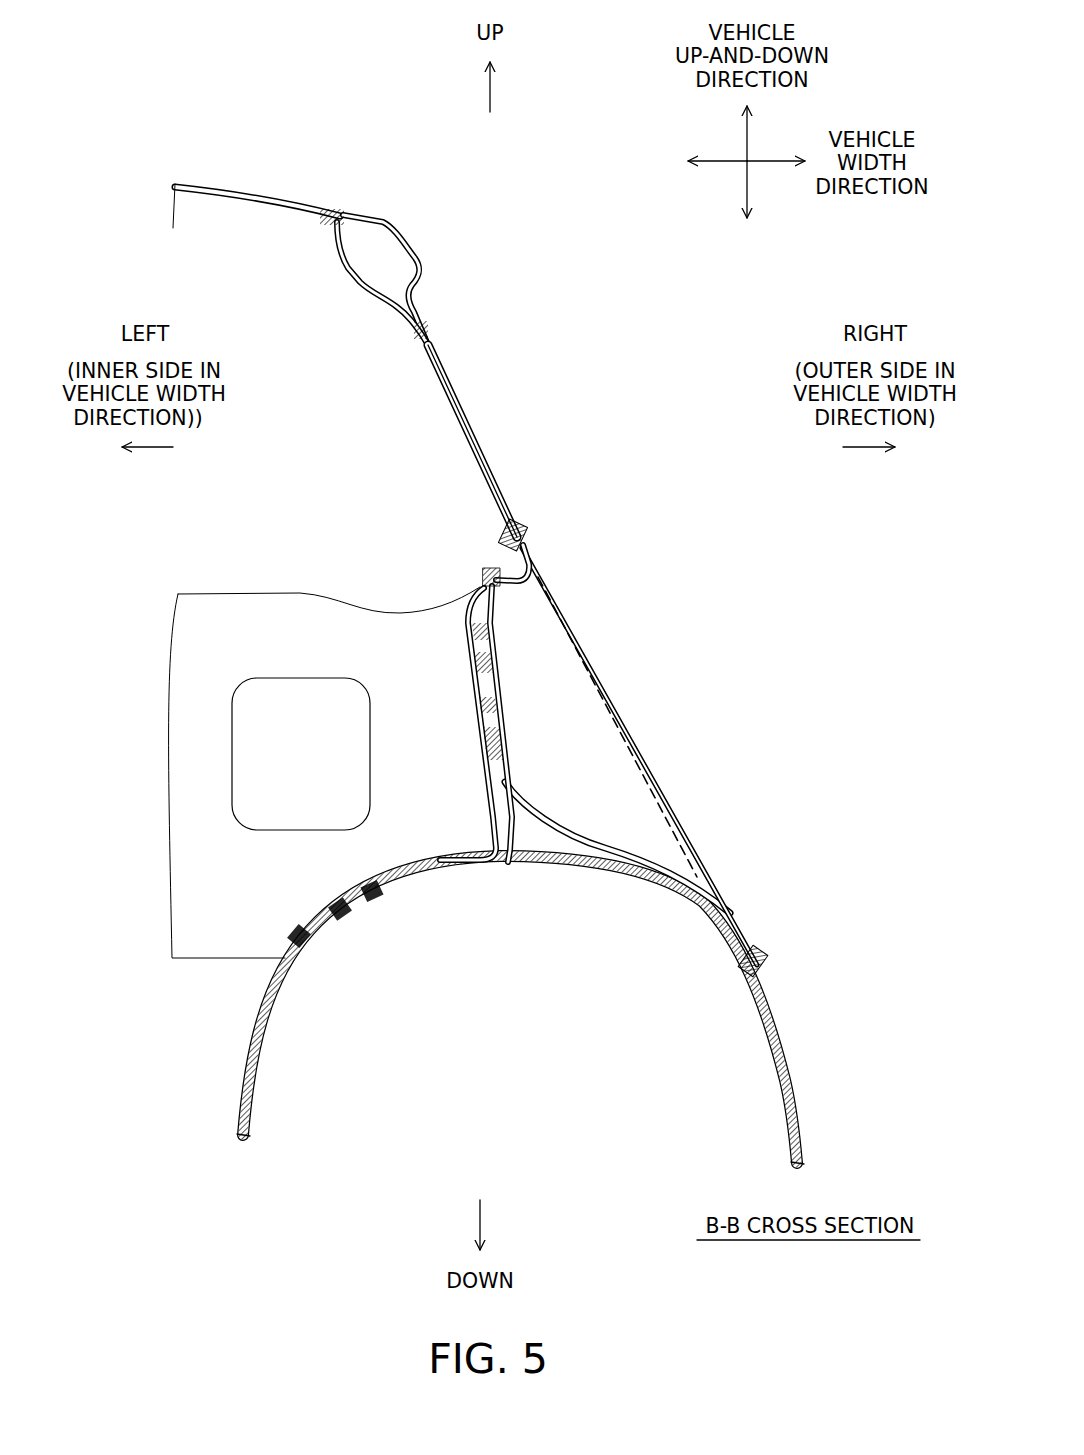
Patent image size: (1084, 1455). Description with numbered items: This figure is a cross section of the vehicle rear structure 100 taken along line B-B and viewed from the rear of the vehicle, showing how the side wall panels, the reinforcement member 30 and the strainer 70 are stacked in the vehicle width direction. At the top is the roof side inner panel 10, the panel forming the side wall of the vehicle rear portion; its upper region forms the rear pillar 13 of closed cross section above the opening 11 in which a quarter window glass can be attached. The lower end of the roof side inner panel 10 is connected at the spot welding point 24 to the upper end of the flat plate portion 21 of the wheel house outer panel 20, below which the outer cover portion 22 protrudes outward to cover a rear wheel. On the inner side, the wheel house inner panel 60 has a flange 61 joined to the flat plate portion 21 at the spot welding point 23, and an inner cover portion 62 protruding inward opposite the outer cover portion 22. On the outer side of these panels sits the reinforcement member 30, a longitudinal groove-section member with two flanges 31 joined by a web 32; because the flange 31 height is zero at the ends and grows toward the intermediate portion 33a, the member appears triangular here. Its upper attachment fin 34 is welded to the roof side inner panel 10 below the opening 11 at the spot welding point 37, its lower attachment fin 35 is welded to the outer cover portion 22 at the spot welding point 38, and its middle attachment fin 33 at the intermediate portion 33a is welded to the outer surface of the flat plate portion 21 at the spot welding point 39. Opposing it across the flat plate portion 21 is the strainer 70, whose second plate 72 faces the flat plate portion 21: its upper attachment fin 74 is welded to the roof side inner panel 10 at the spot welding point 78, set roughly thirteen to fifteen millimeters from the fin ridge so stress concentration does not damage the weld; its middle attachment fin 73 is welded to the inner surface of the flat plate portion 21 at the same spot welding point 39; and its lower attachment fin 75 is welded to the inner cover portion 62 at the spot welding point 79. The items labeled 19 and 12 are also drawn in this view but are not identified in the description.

The vehicle rear structure 100 is at (170, 104).
The roof panel 19 is at (270, 195).
The rear pillar 13 is at (405, 245).
The opening 11 is at (458, 393).
The roof side inner panel 10 is at (493, 455).
The pillar inner flange 12 is at (508, 495).
The upper attachment fin 34 is at (527, 535).
The spot welding point 37 is at (528, 543).
The spot welding point 39 is at (530, 665).
The web 32 is at (594, 667).
The flange 31 is at (563, 704).
The middle attachment fin 33 is at (512, 714).
The intermediate portion 33a is at (590, 776).
The reinforcement member 30 is at (680, 818).
The spot welding point 38 is at (754, 947).
The lower attachment fin 35 is at (762, 968).
The outer cover portion 22 is at (772, 1014).
The wheel house outer panel 20 is at (792, 1067).
The flat plate portion 21 is at (515, 820).
The spot welding point 23 is at (515, 862).
The flange 61 is at (486, 875).
The spot welding point 79 is at (372, 893).
The wheel house inner panel 60 is at (244, 1063).
The inner cover portion 62 is at (262, 1012).
The lower attachment fin 75 is at (357, 890).
The strainer 70 is at (158, 834).
The second plate 72 is at (238, 622).
The middle attachment fin 73 is at (400, 613).
The upper attachment fin 74 is at (480, 566).
The spot welding point 78 is at (478, 580).
The spot welding point 24 is at (467, 655).